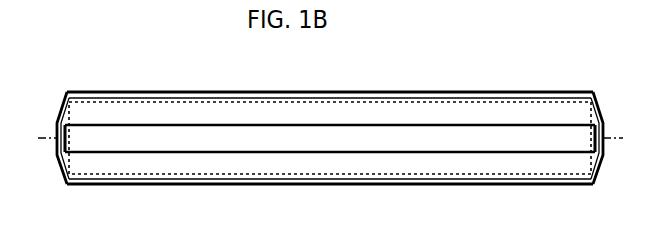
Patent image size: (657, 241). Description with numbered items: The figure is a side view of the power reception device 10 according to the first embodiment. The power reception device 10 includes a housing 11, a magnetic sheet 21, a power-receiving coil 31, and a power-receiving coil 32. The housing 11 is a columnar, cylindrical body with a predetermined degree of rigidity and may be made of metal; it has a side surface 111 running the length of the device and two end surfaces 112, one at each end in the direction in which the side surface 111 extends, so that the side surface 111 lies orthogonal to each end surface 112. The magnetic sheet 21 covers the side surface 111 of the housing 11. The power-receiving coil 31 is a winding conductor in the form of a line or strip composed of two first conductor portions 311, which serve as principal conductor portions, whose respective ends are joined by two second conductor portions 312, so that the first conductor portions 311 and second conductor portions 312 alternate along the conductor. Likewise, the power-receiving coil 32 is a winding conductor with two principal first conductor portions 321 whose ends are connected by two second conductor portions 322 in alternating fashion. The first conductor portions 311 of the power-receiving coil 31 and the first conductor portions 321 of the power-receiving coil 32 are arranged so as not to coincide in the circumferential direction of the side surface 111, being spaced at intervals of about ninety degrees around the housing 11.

The power reception device 10 is at (561, 30).
The housing 11 is at (328, 107).
The side surface 111 is at (194, 98).
The end surface 112 is at (64, 160).
The magnetic sheet 21 is at (513, 113).
The power-receiving coil 31 is at (330, 161).
The first conductor portion 311 is at (208, 150).
The second conductor portion 312 is at (62, 121).
The power-receiving coil 32 is at (330, 184).
The first conductor portion 321 is at (382, 179).
The second conductor portion 322 is at (65, 176).